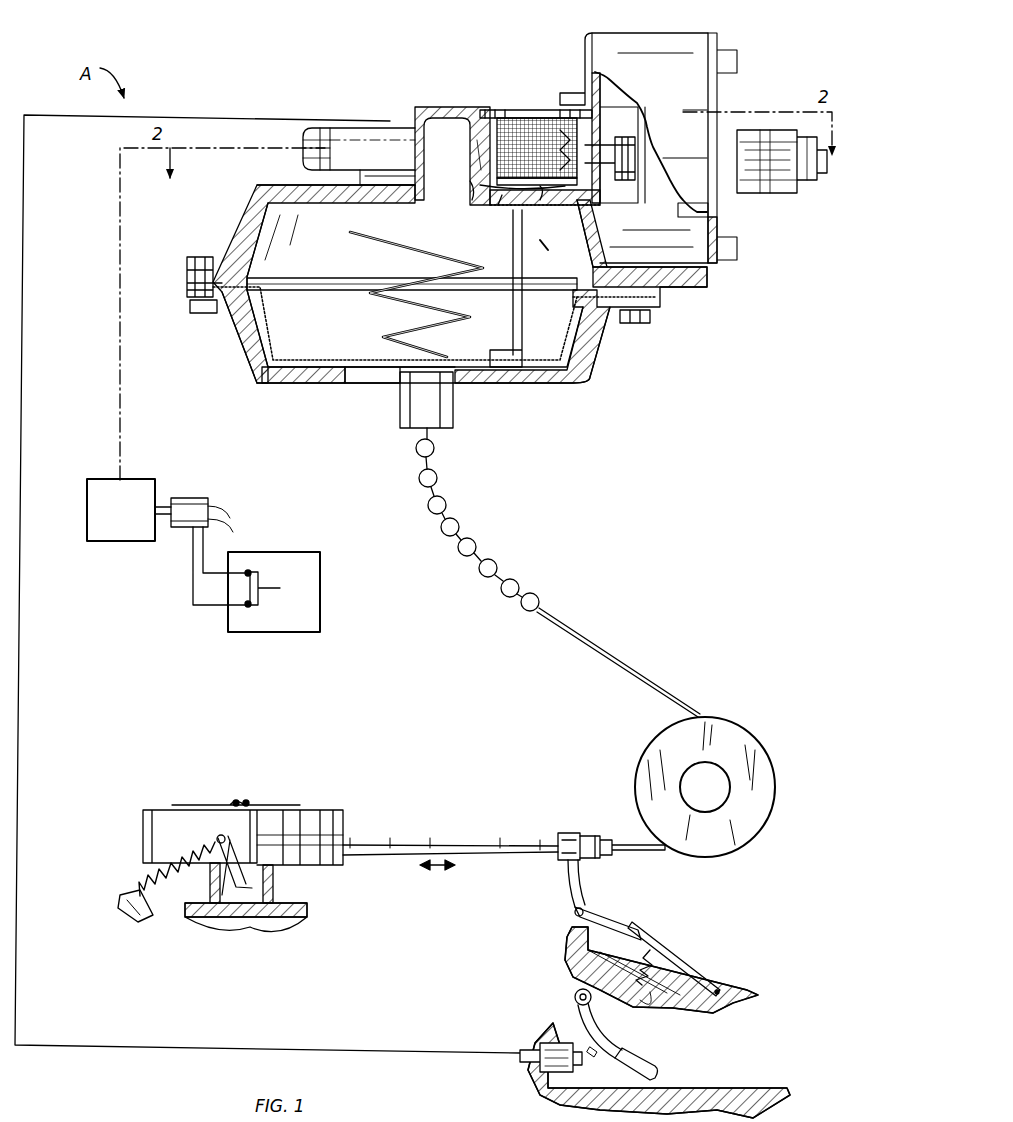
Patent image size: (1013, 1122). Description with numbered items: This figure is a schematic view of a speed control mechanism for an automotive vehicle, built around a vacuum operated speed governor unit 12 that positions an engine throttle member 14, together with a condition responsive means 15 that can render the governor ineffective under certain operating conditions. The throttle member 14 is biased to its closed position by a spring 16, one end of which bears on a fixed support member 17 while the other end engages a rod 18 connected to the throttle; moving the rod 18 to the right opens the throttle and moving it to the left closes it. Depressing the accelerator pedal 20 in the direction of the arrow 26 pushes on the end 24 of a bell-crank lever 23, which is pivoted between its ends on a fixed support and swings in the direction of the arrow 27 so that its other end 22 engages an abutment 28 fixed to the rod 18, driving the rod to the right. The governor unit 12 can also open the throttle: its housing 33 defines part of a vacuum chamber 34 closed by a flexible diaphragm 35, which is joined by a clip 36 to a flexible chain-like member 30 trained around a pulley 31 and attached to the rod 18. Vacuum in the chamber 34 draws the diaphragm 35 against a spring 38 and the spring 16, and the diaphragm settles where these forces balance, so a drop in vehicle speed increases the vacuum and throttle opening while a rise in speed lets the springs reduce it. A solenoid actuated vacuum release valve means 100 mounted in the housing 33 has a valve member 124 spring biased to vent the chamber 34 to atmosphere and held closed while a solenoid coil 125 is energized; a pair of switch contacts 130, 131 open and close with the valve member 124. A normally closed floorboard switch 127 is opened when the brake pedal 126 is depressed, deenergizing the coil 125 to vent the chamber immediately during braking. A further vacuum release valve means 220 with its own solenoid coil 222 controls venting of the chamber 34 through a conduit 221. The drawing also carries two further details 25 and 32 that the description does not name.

The speed governor unit 12 is at (617, 333).
The engine throttle member 14 is at (255, 887).
The condition responsive means 15 is at (305, 578).
The spring 16 is at (163, 882).
The fixed support member 17 is at (140, 920).
The rod 18 is at (425, 822).
The accelerator pedal 20 is at (638, 930).
The end of bell-crank lever 22 is at (566, 832).
The bell-crank lever 23 is at (570, 890).
The end of bell-crank lever 24 is at (630, 944).
The lever 25 is at (596, 912).
The arrow 26 is at (668, 980).
The arrow 27 is at (610, 858).
The abutment 28 is at (582, 835).
The flexible chain-like member 30 is at (590, 635).
The pulley 31 is at (728, 718).
The diaphragm plate 32 is at (330, 312).
The housing 33 is at (245, 332).
The vacuum chamber 34 is at (278, 218).
The flexible diaphragm 35 is at (262, 350).
The clip 36 is at (402, 405).
The spring 38 is at (402, 246).
The solenoid actuated vacuum release valve means 100 is at (492, 115).
The valve member 124 is at (535, 210).
The solenoid coil 125 is at (515, 110).
The brake pedal 126 is at (650, 1055).
The switch 127 is at (548, 1048).
The switch contact 130 is at (478, 180).
The switch contact 131 is at (502, 210).
The vacuum release valve means 220 is at (133, 478).
The conduit 221 is at (358, 128).
The solenoid coil 222 is at (183, 496).